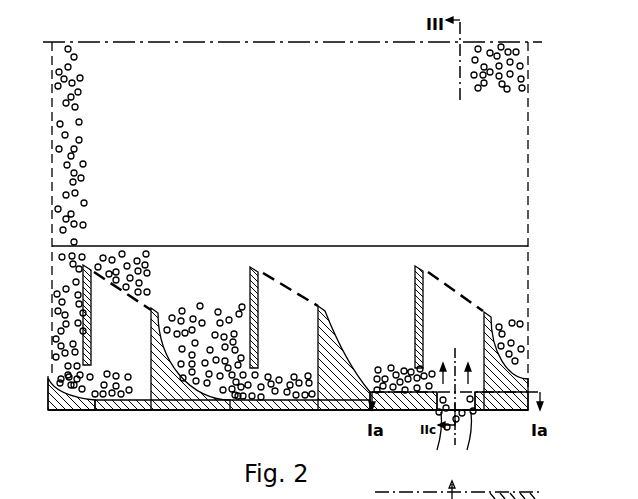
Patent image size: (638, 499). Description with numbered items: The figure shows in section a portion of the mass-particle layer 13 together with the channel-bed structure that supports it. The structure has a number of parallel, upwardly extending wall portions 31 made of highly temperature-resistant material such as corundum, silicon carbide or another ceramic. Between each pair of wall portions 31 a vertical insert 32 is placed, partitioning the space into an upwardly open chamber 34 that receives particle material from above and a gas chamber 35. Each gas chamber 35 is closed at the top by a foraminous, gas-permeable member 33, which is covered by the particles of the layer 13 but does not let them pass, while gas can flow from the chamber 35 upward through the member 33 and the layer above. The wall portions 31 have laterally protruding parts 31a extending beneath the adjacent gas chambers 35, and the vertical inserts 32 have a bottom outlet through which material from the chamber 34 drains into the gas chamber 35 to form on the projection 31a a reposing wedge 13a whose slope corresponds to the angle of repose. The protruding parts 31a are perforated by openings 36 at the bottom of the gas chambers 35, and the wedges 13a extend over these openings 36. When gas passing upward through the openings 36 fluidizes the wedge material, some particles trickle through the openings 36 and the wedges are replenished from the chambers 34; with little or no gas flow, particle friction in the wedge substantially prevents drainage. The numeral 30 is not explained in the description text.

The particle layer 13 is at (500, 130).
The reposing wedge 13a is at (86, 386).
The apparatus floor / base 30 is at (147, 412).
The wall portion 31 is at (180, 392).
The laterally protruding part 31a is at (240, 402).
The vertical insert 32 is at (83, 290).
The gas-permeable member 33 is at (127, 288).
The chamber 34 is at (291, 323).
The gas chamber 35 is at (286, 323).
The opening 36 is at (118, 402).